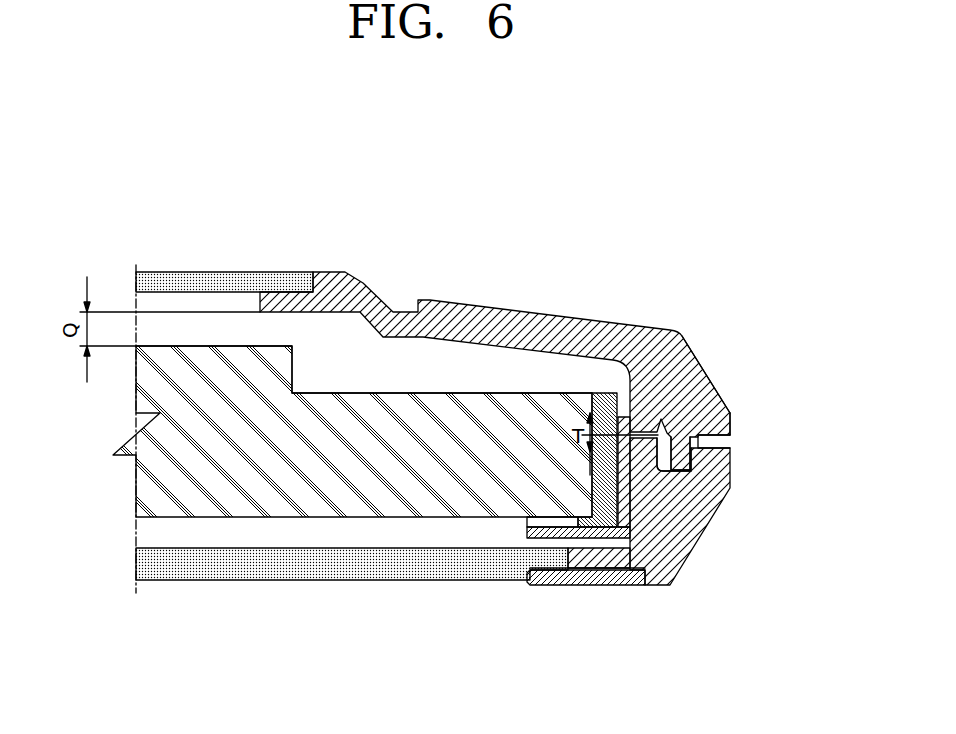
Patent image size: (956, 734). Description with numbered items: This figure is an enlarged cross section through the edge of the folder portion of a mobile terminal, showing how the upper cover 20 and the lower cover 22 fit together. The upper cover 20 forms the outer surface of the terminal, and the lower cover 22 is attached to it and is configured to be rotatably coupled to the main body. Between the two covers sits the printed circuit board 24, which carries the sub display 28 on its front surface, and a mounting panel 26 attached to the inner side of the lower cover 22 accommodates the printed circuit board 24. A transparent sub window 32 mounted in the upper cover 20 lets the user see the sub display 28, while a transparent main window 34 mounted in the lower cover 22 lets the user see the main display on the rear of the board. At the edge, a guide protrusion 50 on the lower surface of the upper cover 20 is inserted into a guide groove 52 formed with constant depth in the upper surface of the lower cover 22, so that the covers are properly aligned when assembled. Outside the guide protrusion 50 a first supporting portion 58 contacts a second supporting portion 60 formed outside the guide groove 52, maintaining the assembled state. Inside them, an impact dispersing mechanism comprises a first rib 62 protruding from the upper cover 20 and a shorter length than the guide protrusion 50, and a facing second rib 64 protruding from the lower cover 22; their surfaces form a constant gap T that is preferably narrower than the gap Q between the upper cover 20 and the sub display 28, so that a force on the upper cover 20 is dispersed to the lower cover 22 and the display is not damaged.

The upper cover 20 is at (471, 310).
The lower cover 22 is at (683, 557).
The printed circuit board 24 is at (280, 503).
The mounting panel 26 is at (551, 533).
The sub display 28 is at (194, 346).
The sub window 32 is at (258, 272).
The main window 34 is at (389, 570).
The guide protrusion 50 is at (697, 463).
The guide groove 52 is at (645, 450).
The first supporting portion 58 is at (700, 413).
The second supporting portion 60 is at (715, 446).
The first rib 62 is at (640, 418).
The second rib 64 is at (637, 430).